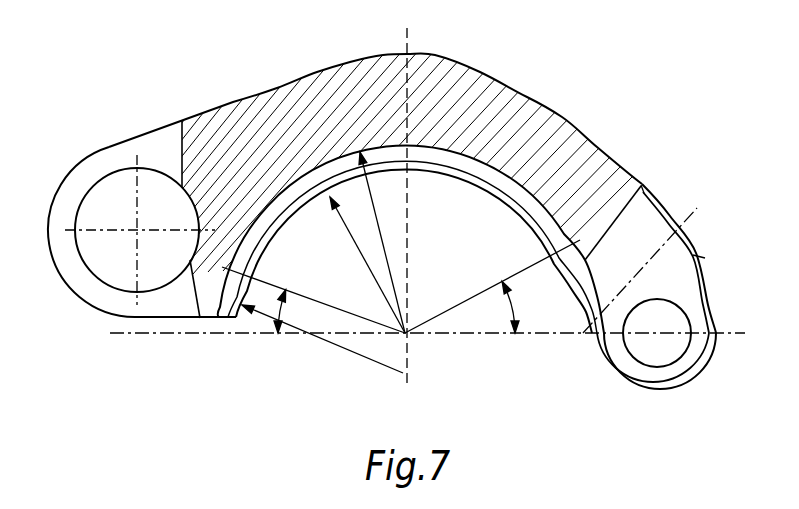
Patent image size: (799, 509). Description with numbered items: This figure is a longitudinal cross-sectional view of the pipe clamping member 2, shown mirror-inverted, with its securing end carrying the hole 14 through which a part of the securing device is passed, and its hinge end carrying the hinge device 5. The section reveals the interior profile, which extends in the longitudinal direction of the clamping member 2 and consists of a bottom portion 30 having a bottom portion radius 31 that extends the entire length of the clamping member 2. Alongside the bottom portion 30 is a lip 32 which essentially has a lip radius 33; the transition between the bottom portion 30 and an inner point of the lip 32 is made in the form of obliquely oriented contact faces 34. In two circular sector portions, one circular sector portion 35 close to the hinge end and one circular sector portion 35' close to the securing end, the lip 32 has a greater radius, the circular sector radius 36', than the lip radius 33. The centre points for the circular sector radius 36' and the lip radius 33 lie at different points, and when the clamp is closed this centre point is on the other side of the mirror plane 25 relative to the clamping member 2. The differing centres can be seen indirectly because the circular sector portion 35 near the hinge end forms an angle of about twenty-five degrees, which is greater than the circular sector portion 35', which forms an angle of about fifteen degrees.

The clamping member 2 is at (435, 68).
The hinge device 5 is at (675, 328).
The hole 14 is at (105, 210).
The mirror plane 25 is at (555, 335).
The bottom portion 30 is at (433, 147).
The bottom portion radius 31 is at (383, 238).
The lip 32 is at (482, 197).
The lip radius 33 is at (357, 251).
The contact faces 34 is at (293, 207).
The circular sector portion 35 is at (492, 309).
The circular sector portion 35' is at (313, 326).
The circular sector radius 36' is at (322, 361).